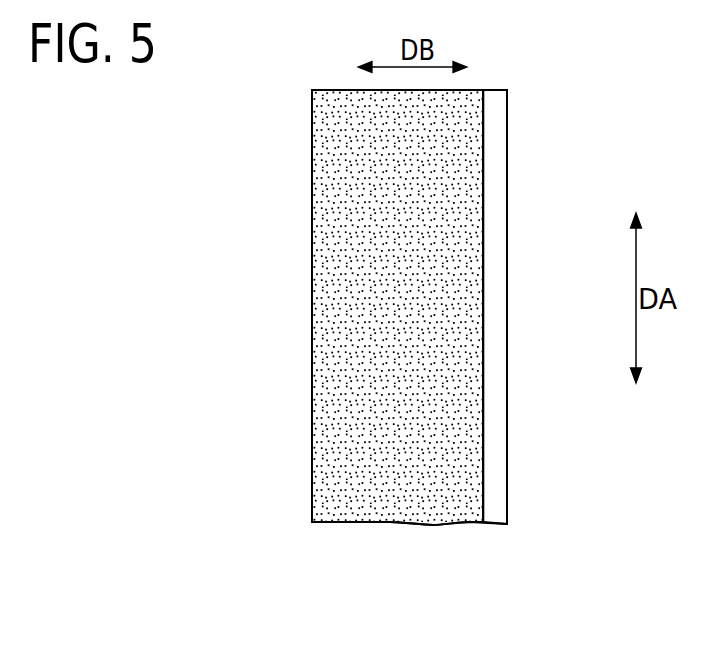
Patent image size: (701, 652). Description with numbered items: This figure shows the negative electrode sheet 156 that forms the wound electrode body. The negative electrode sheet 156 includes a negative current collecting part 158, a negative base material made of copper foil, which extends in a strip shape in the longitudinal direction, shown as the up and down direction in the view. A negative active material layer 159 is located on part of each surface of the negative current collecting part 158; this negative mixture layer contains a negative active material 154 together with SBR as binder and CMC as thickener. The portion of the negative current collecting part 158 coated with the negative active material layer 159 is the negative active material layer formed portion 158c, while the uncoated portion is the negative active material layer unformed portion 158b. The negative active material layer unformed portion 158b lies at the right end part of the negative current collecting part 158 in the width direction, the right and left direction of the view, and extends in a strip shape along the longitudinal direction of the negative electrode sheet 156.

The negative active material 154 is at (327, 427).
The negative electrode sheet 156 is at (422, 538).
The negative current collecting part 158 is at (490, 173).
The negative active material layer unformed portion 158b is at (492, 415).
The negative active material layer formed portion 158c is at (325, 268).
The negative active material layer 159 is at (473, 247).